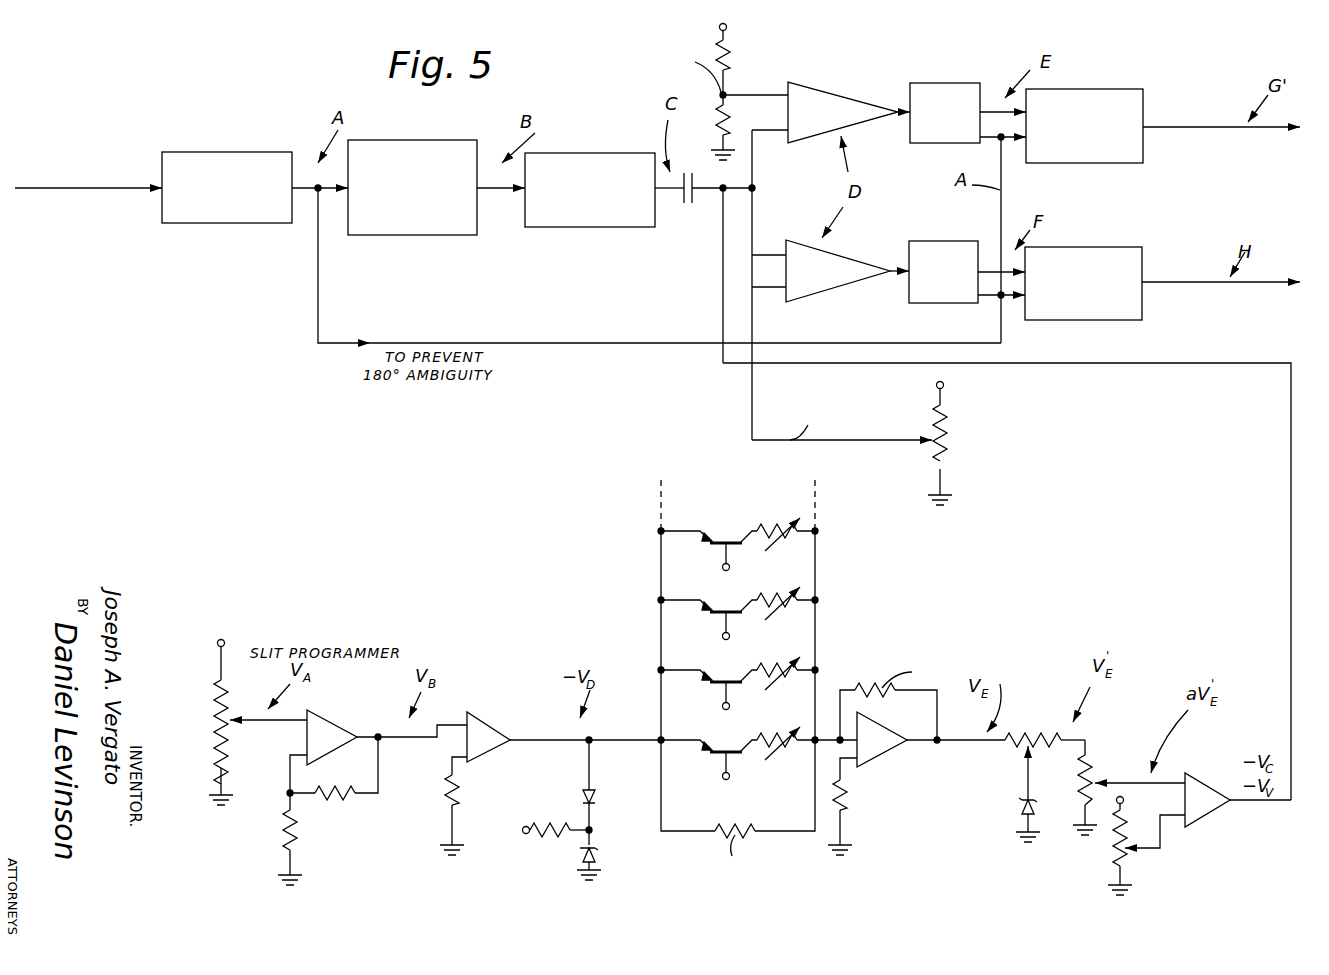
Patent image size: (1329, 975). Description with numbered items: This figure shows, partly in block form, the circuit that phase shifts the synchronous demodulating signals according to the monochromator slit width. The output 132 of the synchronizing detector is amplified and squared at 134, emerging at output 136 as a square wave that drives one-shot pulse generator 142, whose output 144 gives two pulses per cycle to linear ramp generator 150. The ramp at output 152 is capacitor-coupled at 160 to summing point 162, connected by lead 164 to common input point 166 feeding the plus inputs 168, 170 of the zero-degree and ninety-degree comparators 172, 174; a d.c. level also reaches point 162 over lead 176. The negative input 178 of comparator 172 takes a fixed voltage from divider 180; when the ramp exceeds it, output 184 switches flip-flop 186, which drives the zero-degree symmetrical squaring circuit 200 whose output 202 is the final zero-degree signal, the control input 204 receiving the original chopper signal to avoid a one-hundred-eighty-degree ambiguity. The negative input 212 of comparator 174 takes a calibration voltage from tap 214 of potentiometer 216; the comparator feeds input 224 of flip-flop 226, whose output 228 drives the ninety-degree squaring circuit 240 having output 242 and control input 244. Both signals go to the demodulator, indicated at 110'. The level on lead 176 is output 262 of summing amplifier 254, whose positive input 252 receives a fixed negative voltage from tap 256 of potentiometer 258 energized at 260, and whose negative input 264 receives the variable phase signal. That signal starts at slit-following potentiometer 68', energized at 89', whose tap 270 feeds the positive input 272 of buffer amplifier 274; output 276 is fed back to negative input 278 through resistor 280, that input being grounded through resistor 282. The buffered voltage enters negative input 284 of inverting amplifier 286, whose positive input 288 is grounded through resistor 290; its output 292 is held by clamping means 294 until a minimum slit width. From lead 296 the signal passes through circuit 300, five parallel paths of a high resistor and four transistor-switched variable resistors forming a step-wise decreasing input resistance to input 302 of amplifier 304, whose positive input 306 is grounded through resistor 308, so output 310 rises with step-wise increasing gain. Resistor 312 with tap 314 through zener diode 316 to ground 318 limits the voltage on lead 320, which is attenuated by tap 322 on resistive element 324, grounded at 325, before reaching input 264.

The output of synchronizing detector 132 is at (72, 187).
The amplifier and squaring circuit 134 is at (233, 150).
The output of amplifier and squaring circuit 136 is at (303, 191).
The one-shot pulse generator 142 is at (415, 138).
The output of one-shot pulse generator 144 is at (497, 191).
The linear ramp generator 150 is at (580, 150).
The ramp generator output 152 is at (652, 228).
The coupling capacitor 160 is at (690, 206).
The summing point 162 is at (722, 188).
The lead 164 is at (735, 194).
The common input point 166 is at (754, 190).
The plus input of zero-degree comparator 168 is at (781, 134).
The plus input of ninety-degree comparator 170 is at (778, 237).
The zero-degree comparator 172 is at (860, 124).
The ninety-degree comparator 174 is at (837, 250).
The lead 176 is at (722, 298).
The negative input of zero-degree comparator 178 is at (772, 92).
The fixed voltage divider 180 is at (758, 58).
The output of zero-degree comparator 184 is at (899, 108).
The flip-flop 186 is at (960, 83).
The zero-degree symmetrical squaring circuit 200 is at (1100, 88).
The output of zero-degree squaring circuit 202 is at (1182, 124).
The auxiliary control input 204 is at (1003, 142).
The negative input of ninety-degree comparator 212 is at (777, 289).
The variable tap 214 is at (935, 455).
The variable potentiometer 216 is at (963, 424).
The input to flip-flop 224 is at (898, 268).
The flip-flop 226 is at (948, 241).
The output of flip-flop 228 is at (978, 300).
The ninety-degree symmetrical squaring circuit 240 is at (1085, 245).
The output of ninety-degree squaring circuit 242 is at (1165, 274).
The auxiliary control input 244 is at (1003, 300).
The positive input of summing amplifier 252 is at (1160, 832).
The differential amplifier 254 is at (1215, 812).
The manually adjustable tap 256 is at (1135, 850).
The potentiometer 258 is at (1105, 855).
The negative energizing voltage 260 is at (1117, 797).
The output of summing amplifier 262 is at (1269, 803).
The negative input of summing amplifier 264 is at (1165, 778).
The variable tap 270 is at (235, 718).
The positive input of buffer amplifier 272 is at (295, 716).
The buffer amplifier 274 is at (339, 722).
The output of buffer amplifier 276 is at (383, 740).
The negative input of buffer amplifier 278 is at (290, 762).
The feedback resistor 280 is at (337, 798).
The resistor 282 is at (300, 838).
The negative input of inverting amplifier 284 is at (452, 722).
The inverting amplifier 286 is at (500, 732).
The positive input of inverting amplifier 288 is at (447, 775).
The resistor 290 is at (462, 790).
The output of inverting amplifier 292 is at (555, 745).
The clamping means 294 is at (575, 852).
The lead 296 is at (620, 745).
The parallel-path input circuit 300 is at (655, 605).
The input of amplifier 302 is at (828, 737).
The amplifier 304 is at (895, 745).
The positive input of amplifier 306 is at (850, 770).
The resistor 308 is at (848, 805).
The output of amplifier 310 is at (975, 745).
The resistor 312 is at (1028, 736).
The variable tap 314 is at (1020, 760).
The zener diode 316 is at (1014, 798).
The ground 318 is at (1020, 843).
The output lead 320 is at (1078, 742).
The variable tap 322 is at (1110, 778).
The resistive element 324 is at (1077, 782).
The ground 325 is at (1068, 823).
The linear variable potentiometer 68' is at (199, 726).
The energizing voltage 89' is at (240, 610).
The demodulator output lines 110' is at (1293, 210).